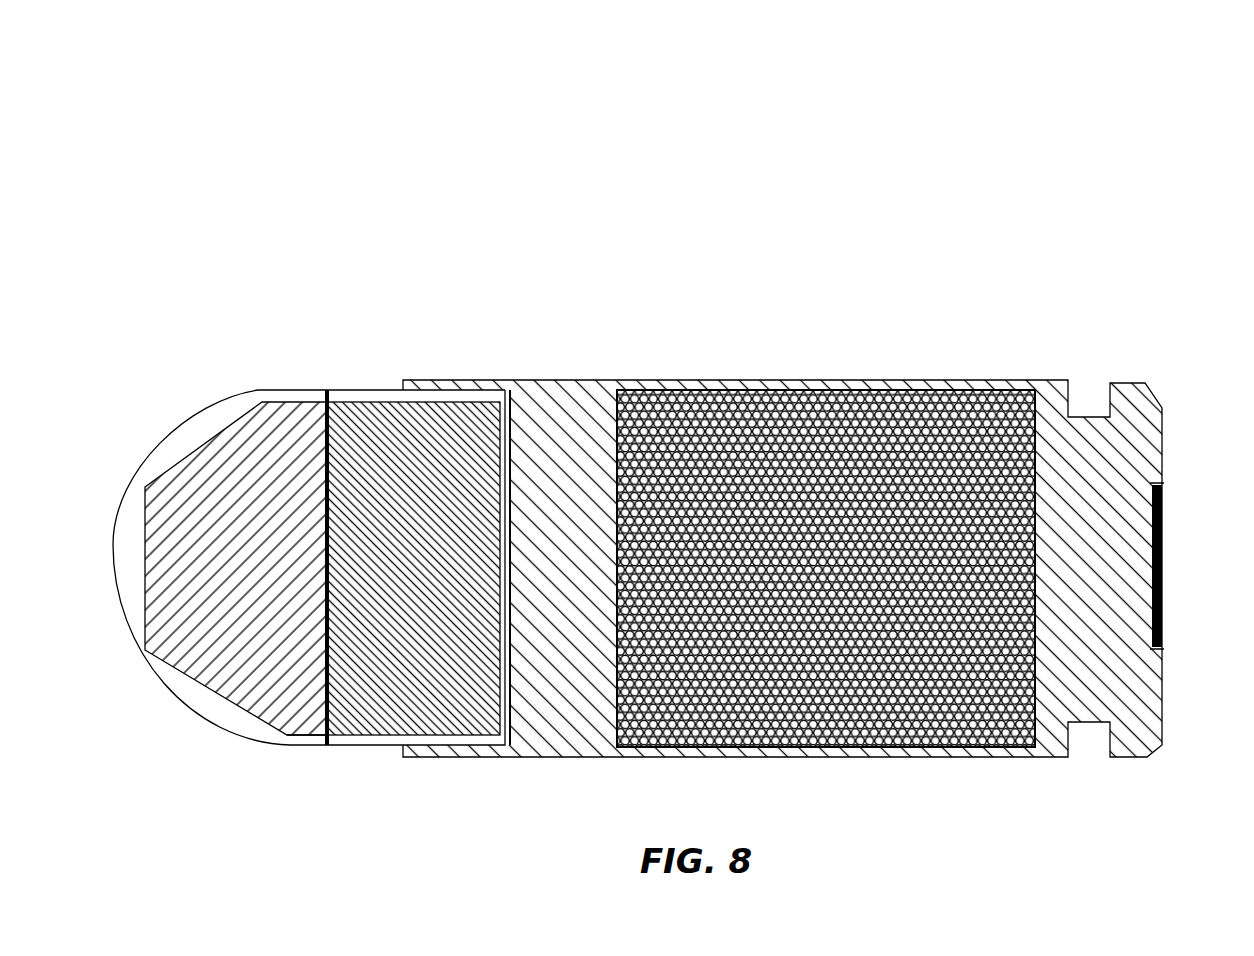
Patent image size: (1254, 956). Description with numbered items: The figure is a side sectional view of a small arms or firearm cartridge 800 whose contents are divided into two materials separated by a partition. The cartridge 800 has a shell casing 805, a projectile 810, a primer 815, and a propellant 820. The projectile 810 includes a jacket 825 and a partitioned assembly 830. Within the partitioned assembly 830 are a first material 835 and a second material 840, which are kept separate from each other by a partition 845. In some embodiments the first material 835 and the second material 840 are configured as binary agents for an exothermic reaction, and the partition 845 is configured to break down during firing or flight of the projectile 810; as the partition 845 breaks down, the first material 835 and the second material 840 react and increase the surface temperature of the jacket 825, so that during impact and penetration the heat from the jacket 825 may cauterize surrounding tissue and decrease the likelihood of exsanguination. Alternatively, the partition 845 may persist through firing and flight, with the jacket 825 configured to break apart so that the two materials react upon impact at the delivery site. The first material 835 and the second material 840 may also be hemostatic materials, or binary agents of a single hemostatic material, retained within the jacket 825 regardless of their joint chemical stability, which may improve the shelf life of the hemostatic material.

The small arms or firearm cartridge 800 is at (473, 132).
The shell casing 805 is at (595, 402).
The projectile 810 is at (206, 360).
The primer 815 is at (1165, 560).
The propellant 820 is at (718, 397).
The jacket 825 is at (173, 437).
The partitioned assembly 830 is at (282, 731).
The first material 835 is at (268, 410).
The second material 840 is at (373, 410).
The partition 845 is at (327, 403).